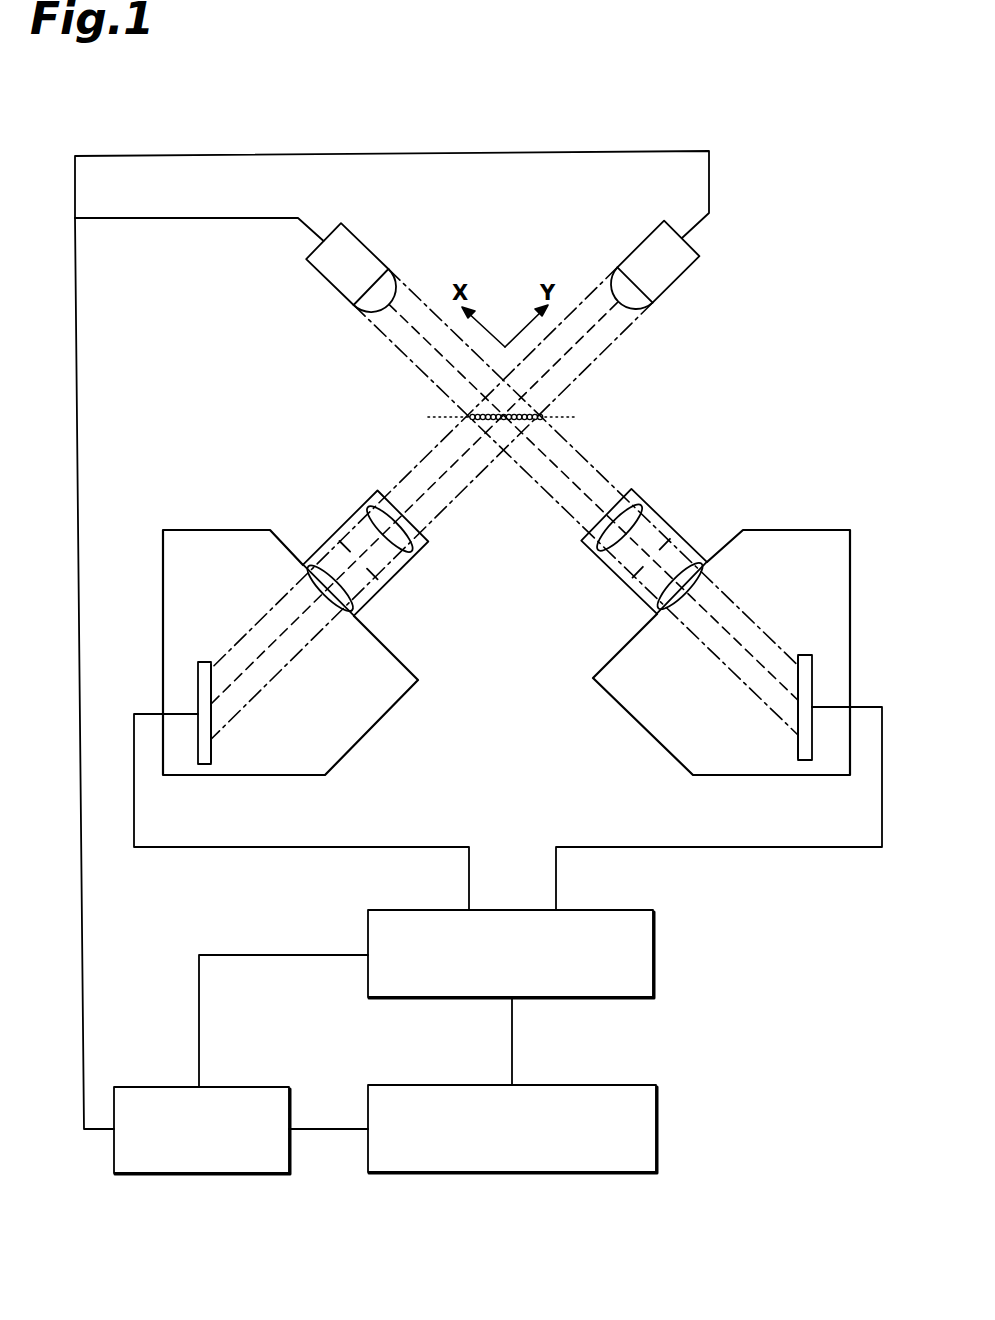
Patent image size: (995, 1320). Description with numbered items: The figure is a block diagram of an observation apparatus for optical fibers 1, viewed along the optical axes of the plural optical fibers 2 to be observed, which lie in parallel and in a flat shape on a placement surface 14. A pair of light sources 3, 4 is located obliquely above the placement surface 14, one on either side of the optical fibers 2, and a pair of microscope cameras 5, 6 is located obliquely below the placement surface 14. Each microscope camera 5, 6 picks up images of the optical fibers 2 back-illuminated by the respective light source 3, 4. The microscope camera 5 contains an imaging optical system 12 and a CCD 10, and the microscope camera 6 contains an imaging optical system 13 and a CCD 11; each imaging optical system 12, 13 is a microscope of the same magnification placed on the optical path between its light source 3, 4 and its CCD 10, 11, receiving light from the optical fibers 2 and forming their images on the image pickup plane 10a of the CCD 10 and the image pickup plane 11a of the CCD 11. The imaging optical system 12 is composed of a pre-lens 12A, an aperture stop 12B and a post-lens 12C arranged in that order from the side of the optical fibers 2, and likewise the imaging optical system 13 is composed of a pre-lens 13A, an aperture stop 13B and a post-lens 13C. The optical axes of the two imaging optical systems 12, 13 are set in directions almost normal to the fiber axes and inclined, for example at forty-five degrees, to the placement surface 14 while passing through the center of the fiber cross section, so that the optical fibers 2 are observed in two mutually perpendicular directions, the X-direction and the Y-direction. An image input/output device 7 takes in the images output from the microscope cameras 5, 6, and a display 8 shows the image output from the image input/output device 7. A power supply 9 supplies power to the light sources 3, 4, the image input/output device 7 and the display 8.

The observation apparatus for optical fibers 1 is at (822, 293).
The optical fibers 2 is at (528, 411).
The light source 3 is at (366, 240).
The light source 4 is at (698, 247).
The microscope camera 5 is at (802, 530).
The microscope camera 6 is at (217, 530).
The image input/output device 7 is at (655, 955).
The display 8 is at (657, 1129).
The power supply 9 is at (272, 1086).
The CCD 10 is at (812, 665).
The image pickup plane 10a is at (797, 747).
The CCD 11 is at (198, 668).
The image pickup plane 11a is at (214, 754).
The imaging optical system 12 is at (617, 561).
The pre-lens 12A is at (608, 548).
The aperture stop 12B is at (634, 573).
The post-lens 12C is at (660, 594).
The imaging optical system 13 is at (403, 562).
The pre-lens 13A is at (398, 556).
The aperture stop 13B is at (376, 576).
The post-lens 13C is at (374, 594).
The placement surface 14 is at (445, 417).